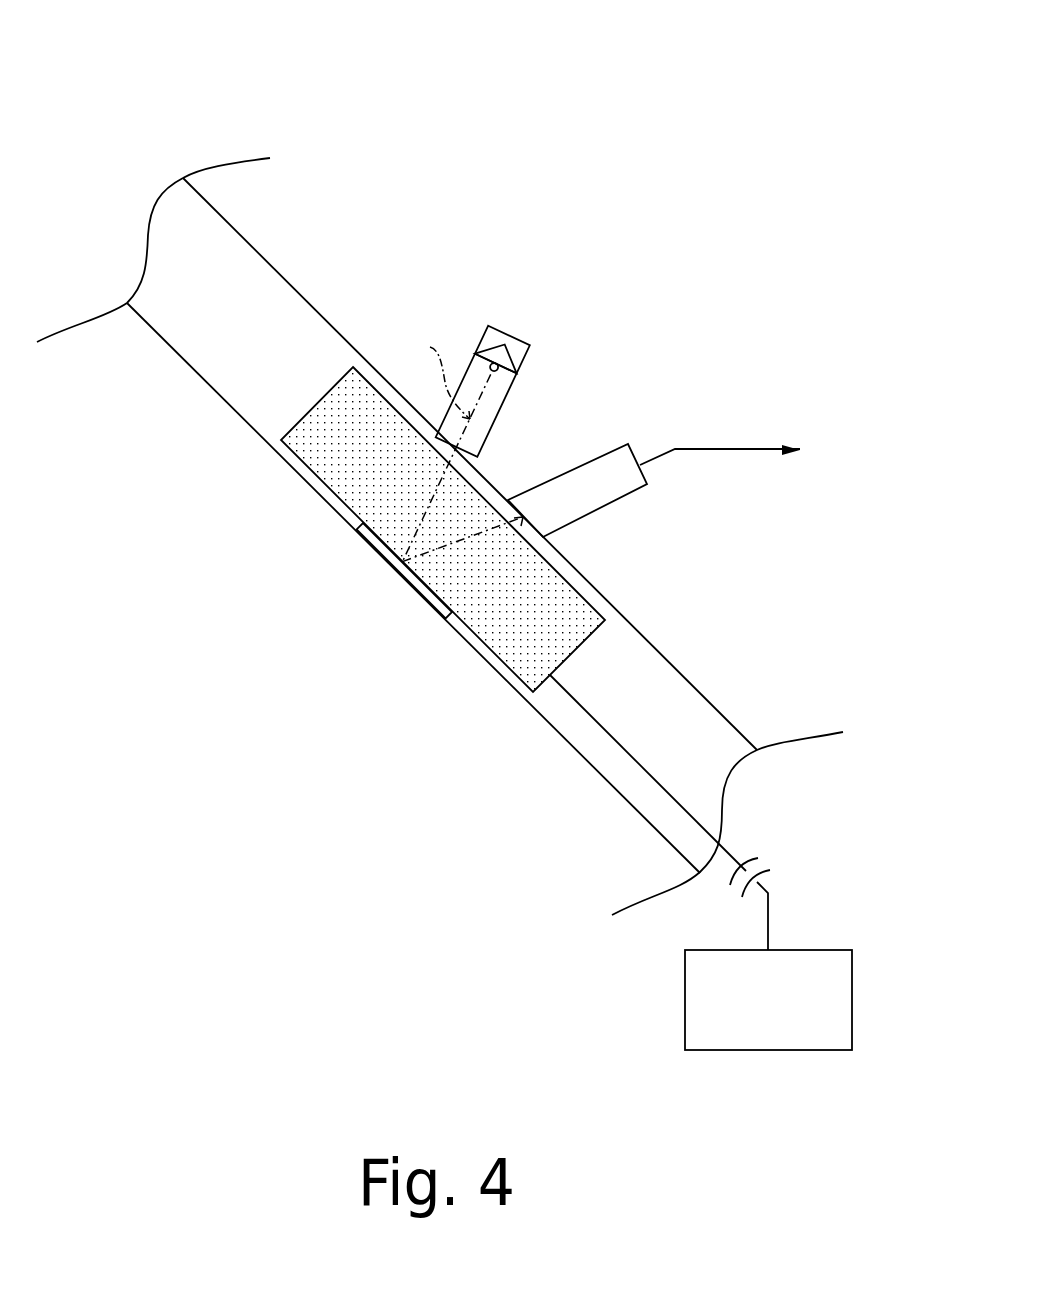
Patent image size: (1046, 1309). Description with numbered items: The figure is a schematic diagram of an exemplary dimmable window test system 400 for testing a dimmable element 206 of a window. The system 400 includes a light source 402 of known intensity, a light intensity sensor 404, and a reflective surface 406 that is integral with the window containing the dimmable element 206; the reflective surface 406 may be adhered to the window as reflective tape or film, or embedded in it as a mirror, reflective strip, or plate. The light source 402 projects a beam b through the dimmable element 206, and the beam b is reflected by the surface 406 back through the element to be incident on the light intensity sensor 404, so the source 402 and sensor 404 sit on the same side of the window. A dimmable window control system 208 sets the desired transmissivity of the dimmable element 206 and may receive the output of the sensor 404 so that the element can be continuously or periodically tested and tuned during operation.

The dimmable window test system 400 is at (137, 98).
The dimmable element 206 is at (330, 340).
The light source 402 is at (487, 328).
The light intensity sensor 404 is at (613, 500).
The reflective surface 406 is at (423, 600).
The dimmable window control system 208 is at (685, 1002).
The beam b is at (430, 348).